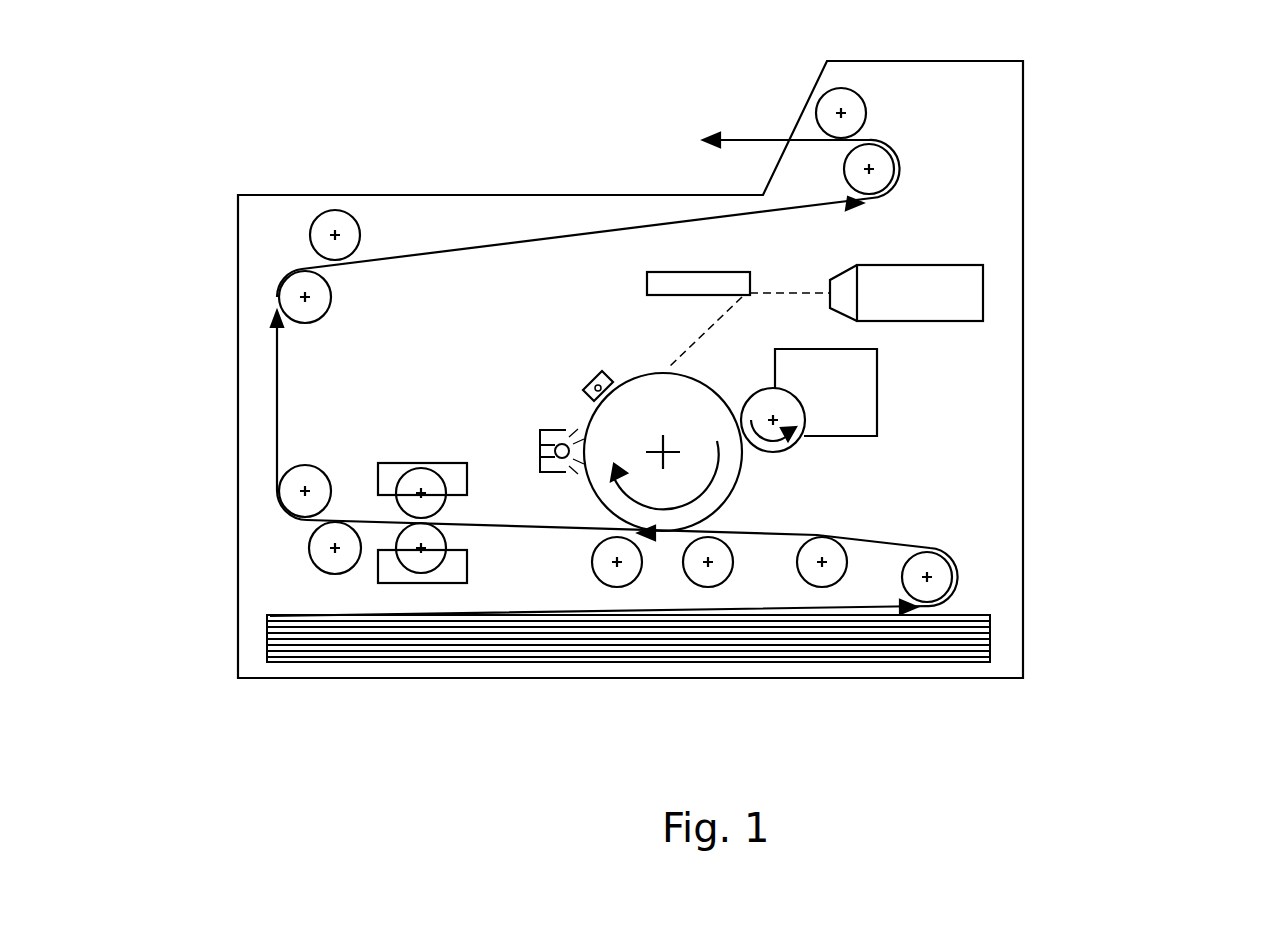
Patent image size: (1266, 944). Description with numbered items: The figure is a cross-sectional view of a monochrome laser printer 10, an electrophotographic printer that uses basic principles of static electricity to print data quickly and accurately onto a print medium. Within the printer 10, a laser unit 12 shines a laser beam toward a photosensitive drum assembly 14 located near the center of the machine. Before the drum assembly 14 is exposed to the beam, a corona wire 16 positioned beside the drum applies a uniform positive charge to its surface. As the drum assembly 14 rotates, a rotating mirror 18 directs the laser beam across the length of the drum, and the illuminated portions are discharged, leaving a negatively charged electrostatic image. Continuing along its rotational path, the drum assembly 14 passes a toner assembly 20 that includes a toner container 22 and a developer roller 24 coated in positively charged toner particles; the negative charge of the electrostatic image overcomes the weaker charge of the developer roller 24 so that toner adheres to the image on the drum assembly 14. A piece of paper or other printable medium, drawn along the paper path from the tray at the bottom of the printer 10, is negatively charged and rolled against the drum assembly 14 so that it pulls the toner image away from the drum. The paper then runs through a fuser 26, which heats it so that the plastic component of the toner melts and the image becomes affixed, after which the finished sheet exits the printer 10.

The monochrome laser printer 10 is at (1127, 110).
The laser unit 12 is at (957, 263).
The photosensitive drum assembly 14 is at (602, 503).
The corona wire 16 is at (593, 368).
The rotating mirror 18 is at (653, 272).
The toner assembly 20 is at (943, 456).
The toner container 22 is at (876, 350).
The developer roller 24 is at (780, 453).
The fuser 26 is at (400, 463).